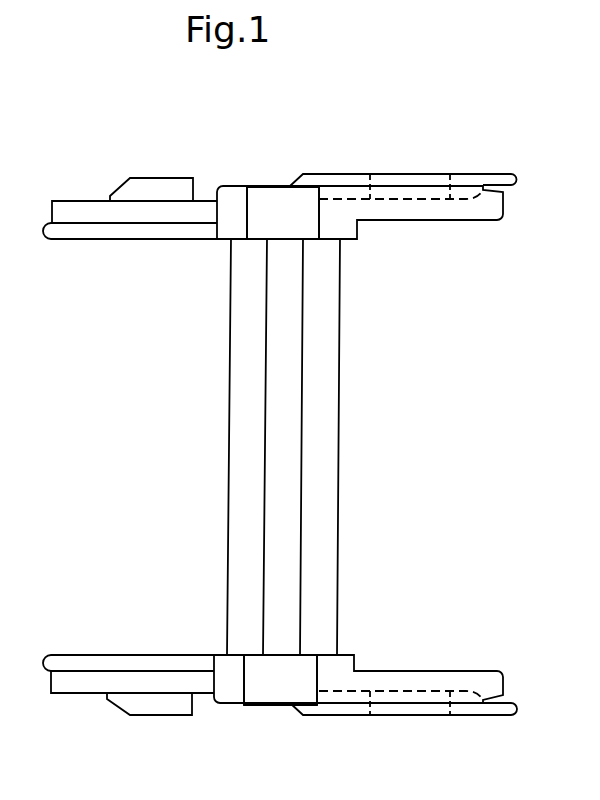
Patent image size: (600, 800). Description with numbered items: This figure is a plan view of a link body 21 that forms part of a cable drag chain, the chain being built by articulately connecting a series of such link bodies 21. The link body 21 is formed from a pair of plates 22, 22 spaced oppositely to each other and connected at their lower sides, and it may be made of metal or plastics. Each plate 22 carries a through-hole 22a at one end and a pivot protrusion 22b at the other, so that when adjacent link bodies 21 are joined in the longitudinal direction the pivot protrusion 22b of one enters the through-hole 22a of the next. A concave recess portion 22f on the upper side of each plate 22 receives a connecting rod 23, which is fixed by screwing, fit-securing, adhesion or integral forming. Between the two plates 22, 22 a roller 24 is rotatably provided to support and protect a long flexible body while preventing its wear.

The link body 21 is at (457, 165).
The plate 22 is at (90, 230).
The through-hole 22a is at (400, 178).
The pivot protrusion 22b is at (167, 185).
The concave recess portion 22f is at (267, 192).
The connecting rod 23 is at (327, 362).
The roller 24 is at (288, 456).